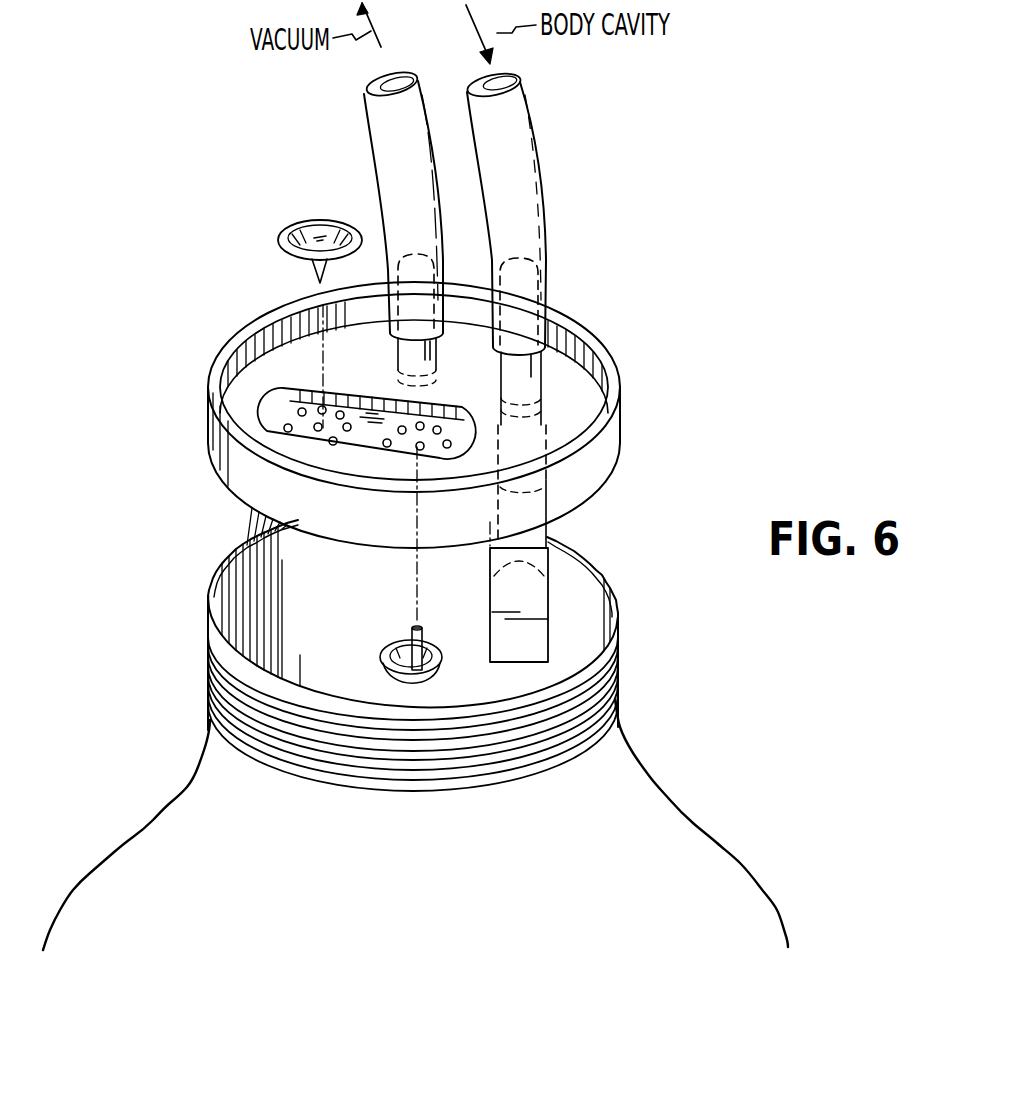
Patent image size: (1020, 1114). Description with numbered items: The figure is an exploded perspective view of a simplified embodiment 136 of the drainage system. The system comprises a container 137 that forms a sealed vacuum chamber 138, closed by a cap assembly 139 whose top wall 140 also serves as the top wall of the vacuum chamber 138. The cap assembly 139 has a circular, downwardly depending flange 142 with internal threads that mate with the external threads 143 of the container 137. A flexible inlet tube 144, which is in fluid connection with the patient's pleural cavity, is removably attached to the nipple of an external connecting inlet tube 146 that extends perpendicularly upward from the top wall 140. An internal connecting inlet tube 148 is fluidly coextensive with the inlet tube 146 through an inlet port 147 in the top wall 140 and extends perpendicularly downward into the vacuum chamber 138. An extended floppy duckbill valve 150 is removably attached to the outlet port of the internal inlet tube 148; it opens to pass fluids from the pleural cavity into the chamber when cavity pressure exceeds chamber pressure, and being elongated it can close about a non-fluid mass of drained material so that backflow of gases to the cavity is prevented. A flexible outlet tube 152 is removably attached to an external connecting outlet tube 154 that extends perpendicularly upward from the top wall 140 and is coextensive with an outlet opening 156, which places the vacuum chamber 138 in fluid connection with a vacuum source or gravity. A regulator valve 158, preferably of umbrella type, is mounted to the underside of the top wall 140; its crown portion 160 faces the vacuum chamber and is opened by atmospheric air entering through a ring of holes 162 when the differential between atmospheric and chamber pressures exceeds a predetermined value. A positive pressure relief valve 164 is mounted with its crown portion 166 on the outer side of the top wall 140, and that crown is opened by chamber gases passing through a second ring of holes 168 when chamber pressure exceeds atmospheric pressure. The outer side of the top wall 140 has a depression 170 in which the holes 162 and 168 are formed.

The simplified embodiment 136 is at (182, 312).
The container 137 is at (729, 765).
The sealed vacuum chamber 138 is at (713, 879).
The cap assembly 139 is at (618, 327).
The top wall 140 is at (609, 375).
The circular downwardly depending flange 142 is at (212, 432).
The external threads 143 is at (208, 672).
The flexible inlet tube 144 is at (526, 190).
The external connecting inlet tube 146 is at (540, 292).
The inlet port 147 is at (535, 413).
The internal connecting inlet tube 148 is at (522, 449).
The extended floppy duckbill valve 150 is at (548, 541).
The flexible outlet tube 152 is at (387, 126).
The external connecting outlet tube 154 is at (415, 281).
The outlet opening 156 is at (392, 378).
The regulator valve 158 is at (395, 639).
The crown portion 160 is at (398, 684).
The ring of holes 162 is at (412, 449).
The positive pressure relief valve 164 is at (295, 223).
The crown portion 166 is at (324, 232).
The ring of holes 168 is at (265, 400).
The depression 170 is at (320, 440).